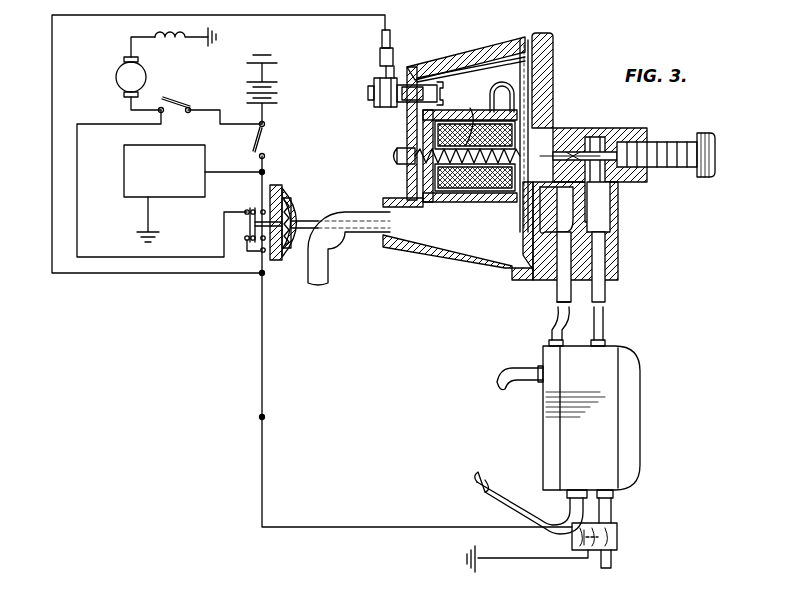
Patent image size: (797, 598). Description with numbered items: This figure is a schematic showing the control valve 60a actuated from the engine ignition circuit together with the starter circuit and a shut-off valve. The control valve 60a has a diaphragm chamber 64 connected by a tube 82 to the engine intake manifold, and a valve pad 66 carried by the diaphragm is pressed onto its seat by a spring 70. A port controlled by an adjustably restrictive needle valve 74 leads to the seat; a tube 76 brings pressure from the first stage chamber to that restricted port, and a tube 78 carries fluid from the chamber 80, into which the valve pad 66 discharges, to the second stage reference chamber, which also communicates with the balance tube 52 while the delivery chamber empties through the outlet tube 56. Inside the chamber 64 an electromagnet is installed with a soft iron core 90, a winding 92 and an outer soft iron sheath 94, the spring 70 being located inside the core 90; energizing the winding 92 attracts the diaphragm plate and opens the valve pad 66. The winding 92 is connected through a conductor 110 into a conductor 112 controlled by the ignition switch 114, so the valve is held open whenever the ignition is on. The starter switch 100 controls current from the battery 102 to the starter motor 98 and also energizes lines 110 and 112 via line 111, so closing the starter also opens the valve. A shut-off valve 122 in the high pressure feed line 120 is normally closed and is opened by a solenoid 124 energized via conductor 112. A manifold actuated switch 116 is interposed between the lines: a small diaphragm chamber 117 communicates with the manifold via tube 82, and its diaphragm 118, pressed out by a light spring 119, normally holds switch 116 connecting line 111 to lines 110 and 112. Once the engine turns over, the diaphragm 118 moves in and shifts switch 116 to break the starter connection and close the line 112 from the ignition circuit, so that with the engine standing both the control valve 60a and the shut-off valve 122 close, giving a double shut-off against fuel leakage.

The balance tube 52 is at (510, 384).
The outlet tube 56 is at (500, 477).
The control valve 60a is at (563, 80).
The diaphragm chamber 64 is at (460, 240).
The valve pad 66 is at (552, 131).
The spring 70 is at (488, 170).
The needle valve 74 is at (598, 137).
The tube 76 is at (606, 300).
The tube 78 is at (556, 298).
The chamber 80 is at (553, 200).
The tube 82 is at (330, 284).
The soft iron core 90 is at (473, 116).
The winding 92 is at (445, 108).
The outer soft iron sheath 94 is at (496, 108).
The starter motor 98 is at (118, 72).
The starter switch 100 is at (170, 98).
The battery 102 is at (272, 90).
The conductor 110 is at (270, 15).
The line 111 is at (118, 273).
The conductor 112 is at (265, 171).
The ignition switch 114 is at (266, 135).
The manifold actuated switch 116 is at (240, 226).
The small diaphragm chamber 117 is at (305, 216).
The diaphragm 118 is at (290, 200).
The light spring 119 is at (284, 250).
The high pressure feed line 120 is at (613, 505).
The shut-off valve 122 is at (619, 533).
The solenoid 124 is at (589, 545).